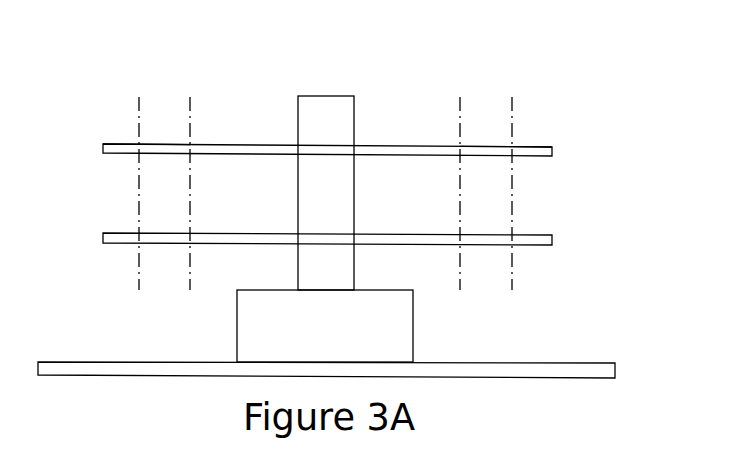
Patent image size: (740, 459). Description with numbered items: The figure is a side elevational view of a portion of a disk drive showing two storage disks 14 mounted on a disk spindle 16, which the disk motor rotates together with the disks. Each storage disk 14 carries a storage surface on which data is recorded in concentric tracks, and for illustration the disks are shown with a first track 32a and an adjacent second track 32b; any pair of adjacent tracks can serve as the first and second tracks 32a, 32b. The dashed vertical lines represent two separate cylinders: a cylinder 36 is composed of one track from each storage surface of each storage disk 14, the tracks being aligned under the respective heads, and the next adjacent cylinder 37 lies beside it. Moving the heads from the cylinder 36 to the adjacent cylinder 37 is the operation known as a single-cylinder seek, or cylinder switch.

The storage disk 14 is at (536, 159).
The disk spindle 16 is at (321, 91).
The first track 32a is at (136, 143).
The second track 32b is at (193, 142).
The cylinder 36 is at (136, 108).
The adjacent cylinder 37 is at (194, 104).